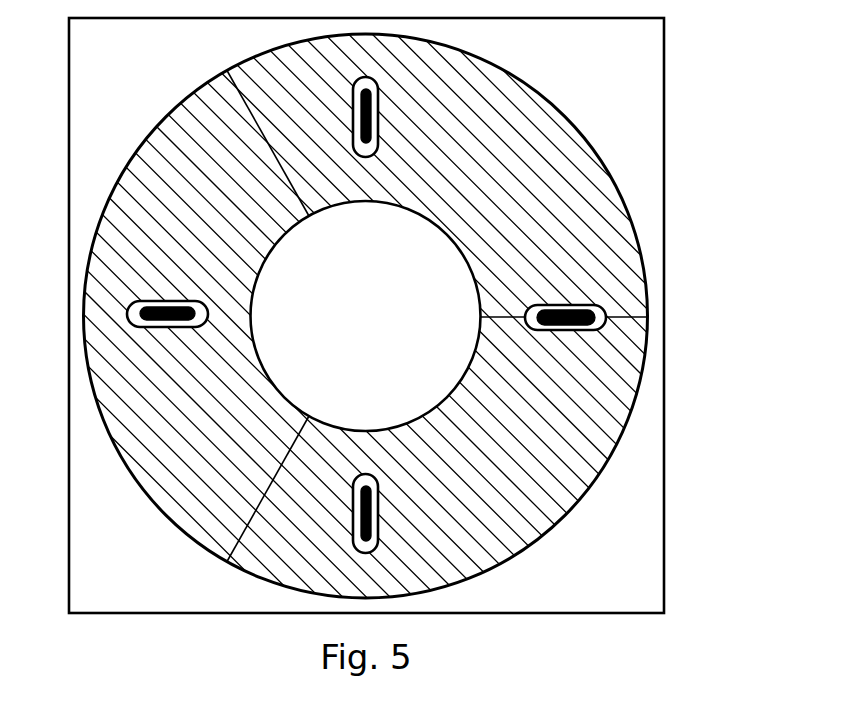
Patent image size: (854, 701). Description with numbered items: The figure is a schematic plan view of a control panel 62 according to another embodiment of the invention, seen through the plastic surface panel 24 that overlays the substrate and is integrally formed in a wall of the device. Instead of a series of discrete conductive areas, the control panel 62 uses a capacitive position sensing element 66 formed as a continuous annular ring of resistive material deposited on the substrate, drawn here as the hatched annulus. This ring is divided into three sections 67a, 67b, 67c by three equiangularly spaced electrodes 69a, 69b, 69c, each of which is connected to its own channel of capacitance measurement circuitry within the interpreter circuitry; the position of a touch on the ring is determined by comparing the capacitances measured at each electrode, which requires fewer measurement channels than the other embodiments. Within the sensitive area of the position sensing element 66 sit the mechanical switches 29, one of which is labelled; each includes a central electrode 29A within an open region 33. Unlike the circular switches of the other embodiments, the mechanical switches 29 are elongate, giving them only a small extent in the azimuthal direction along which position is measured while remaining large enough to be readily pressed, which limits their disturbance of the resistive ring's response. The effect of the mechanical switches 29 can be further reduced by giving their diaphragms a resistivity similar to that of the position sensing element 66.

The surface panel 24 is at (427, 350).
The control panel 62 is at (672, 50).
The capacitive position sensing element 66 is at (143, 137).
The first section of the resistive ring 67a is at (180, 213).
The second section of the resistive ring 67b is at (481, 215).
The third section of the resistive ring 67c is at (485, 457).
The first electrode 69a is at (227, 70).
The second electrode 69b is at (648, 317).
The third electrode 69c is at (224, 558).
The mechanical switch 29 is at (163, 320).
The central electrode 29A is at (160, 302).
The open region 33 is at (178, 301).